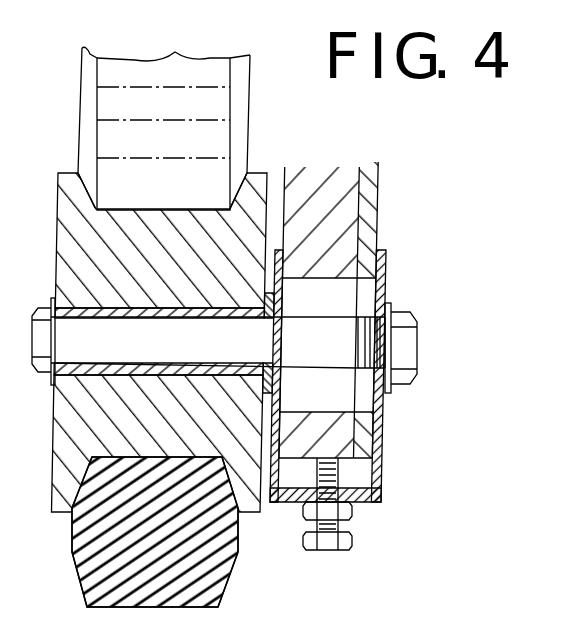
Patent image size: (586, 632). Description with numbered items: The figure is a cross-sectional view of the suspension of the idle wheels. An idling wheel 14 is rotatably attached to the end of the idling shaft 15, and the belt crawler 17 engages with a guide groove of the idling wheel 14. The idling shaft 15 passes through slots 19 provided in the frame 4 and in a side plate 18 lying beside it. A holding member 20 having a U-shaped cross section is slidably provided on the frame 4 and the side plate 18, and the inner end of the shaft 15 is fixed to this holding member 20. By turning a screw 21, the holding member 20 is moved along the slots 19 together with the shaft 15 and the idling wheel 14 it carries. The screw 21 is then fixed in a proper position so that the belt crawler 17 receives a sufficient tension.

The frame 4 is at (343, 206).
The idling wheel 14 is at (57, 460).
The idling shaft 15 is at (78, 352).
The belt crawler 17 is at (100, 582).
The side plate 18 is at (368, 226).
The slot 19 is at (344, 280).
The holding member 20 is at (372, 500).
The screw 21 is at (313, 480).